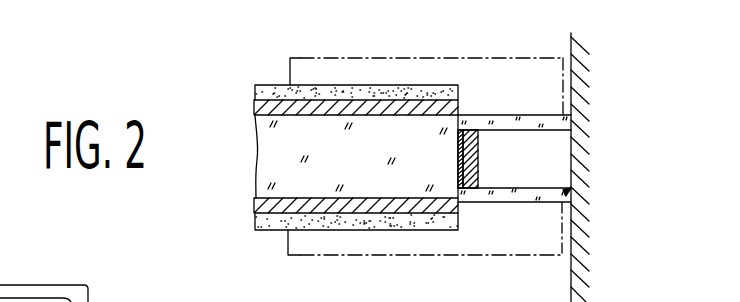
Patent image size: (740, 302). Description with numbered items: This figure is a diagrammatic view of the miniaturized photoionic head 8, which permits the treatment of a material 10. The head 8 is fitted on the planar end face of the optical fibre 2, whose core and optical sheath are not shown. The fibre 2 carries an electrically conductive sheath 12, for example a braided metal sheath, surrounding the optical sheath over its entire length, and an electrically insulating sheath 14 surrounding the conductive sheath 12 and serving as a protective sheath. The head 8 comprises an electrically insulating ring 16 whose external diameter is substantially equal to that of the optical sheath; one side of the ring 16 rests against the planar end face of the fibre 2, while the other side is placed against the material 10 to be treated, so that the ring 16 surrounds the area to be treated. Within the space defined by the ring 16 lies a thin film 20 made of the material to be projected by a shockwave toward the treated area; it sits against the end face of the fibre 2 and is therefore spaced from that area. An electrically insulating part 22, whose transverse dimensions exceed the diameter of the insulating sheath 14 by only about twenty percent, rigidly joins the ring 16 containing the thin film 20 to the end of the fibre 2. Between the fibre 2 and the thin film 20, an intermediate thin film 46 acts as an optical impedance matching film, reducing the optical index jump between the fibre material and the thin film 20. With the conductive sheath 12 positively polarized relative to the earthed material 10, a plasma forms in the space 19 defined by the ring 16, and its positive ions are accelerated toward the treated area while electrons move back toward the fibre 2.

The fibre 2 is at (274, 175).
The miniaturized photoionic head 8 is at (381, 263).
The material 10 is at (576, 78).
The electrically conductive sheath 12 is at (259, 107).
The electrically insulating sheath 14 is at (272, 92).
The electrically insulating ring 16 is at (572, 194).
The space 19 is at (560, 147).
The thin film 20 is at (477, 150).
The electrically insulating part 22 is at (516, 256).
The intermediate thin film 46 is at (456, 149).